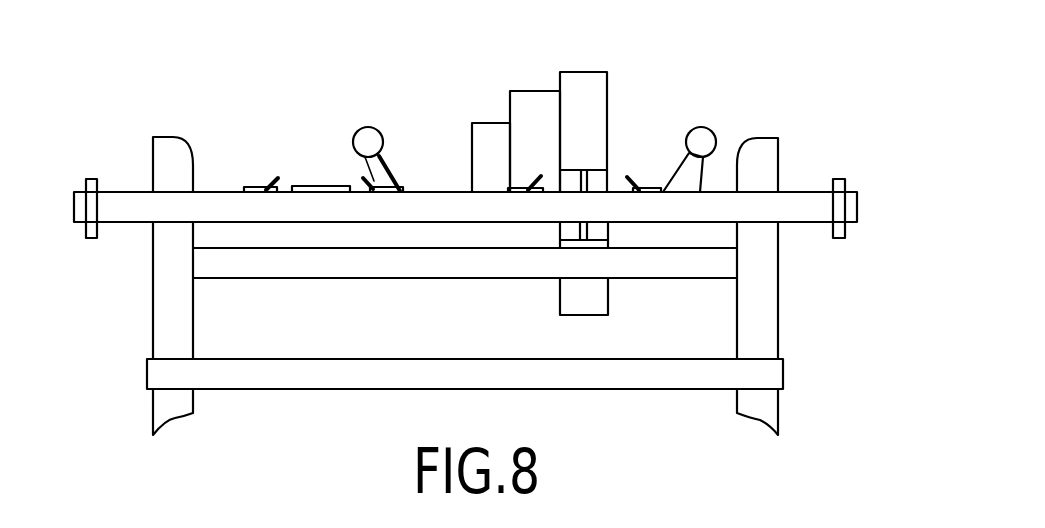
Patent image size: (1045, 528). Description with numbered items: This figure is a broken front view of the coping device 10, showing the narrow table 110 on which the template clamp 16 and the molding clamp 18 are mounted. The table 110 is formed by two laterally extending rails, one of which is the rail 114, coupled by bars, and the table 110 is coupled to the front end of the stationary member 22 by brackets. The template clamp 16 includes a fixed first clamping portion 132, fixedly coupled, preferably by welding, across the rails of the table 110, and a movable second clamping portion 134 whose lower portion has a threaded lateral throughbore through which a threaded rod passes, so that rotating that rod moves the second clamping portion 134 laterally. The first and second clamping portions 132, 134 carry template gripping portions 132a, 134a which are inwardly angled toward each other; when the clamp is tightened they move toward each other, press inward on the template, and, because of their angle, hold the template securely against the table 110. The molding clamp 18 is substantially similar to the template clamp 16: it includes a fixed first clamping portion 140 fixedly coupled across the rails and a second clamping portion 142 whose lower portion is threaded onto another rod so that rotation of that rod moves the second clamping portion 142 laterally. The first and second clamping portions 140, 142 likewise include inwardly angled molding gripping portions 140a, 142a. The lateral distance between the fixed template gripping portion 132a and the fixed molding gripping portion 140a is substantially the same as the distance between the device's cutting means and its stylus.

The coping device 10 is at (192, 80).
The stationary member 22 is at (158, 327).
The table 110 is at (847, 209).
The rail 114 is at (132, 197).
The template clamp 16 is at (256, 193).
The molding clamp 18 is at (518, 192).
The fixed first clamping portion 132 is at (266, 181).
The template gripping portion 132a is at (290, 169).
The movable second clamping portion 134 is at (373, 182).
The template gripping portion 134a is at (360, 178).
The fixed first clamping portion 140 is at (535, 187).
The molding gripping portion 140a is at (542, 177).
The second clamping portion 142 is at (637, 183).
The molding gripping portion 142a is at (628, 176).